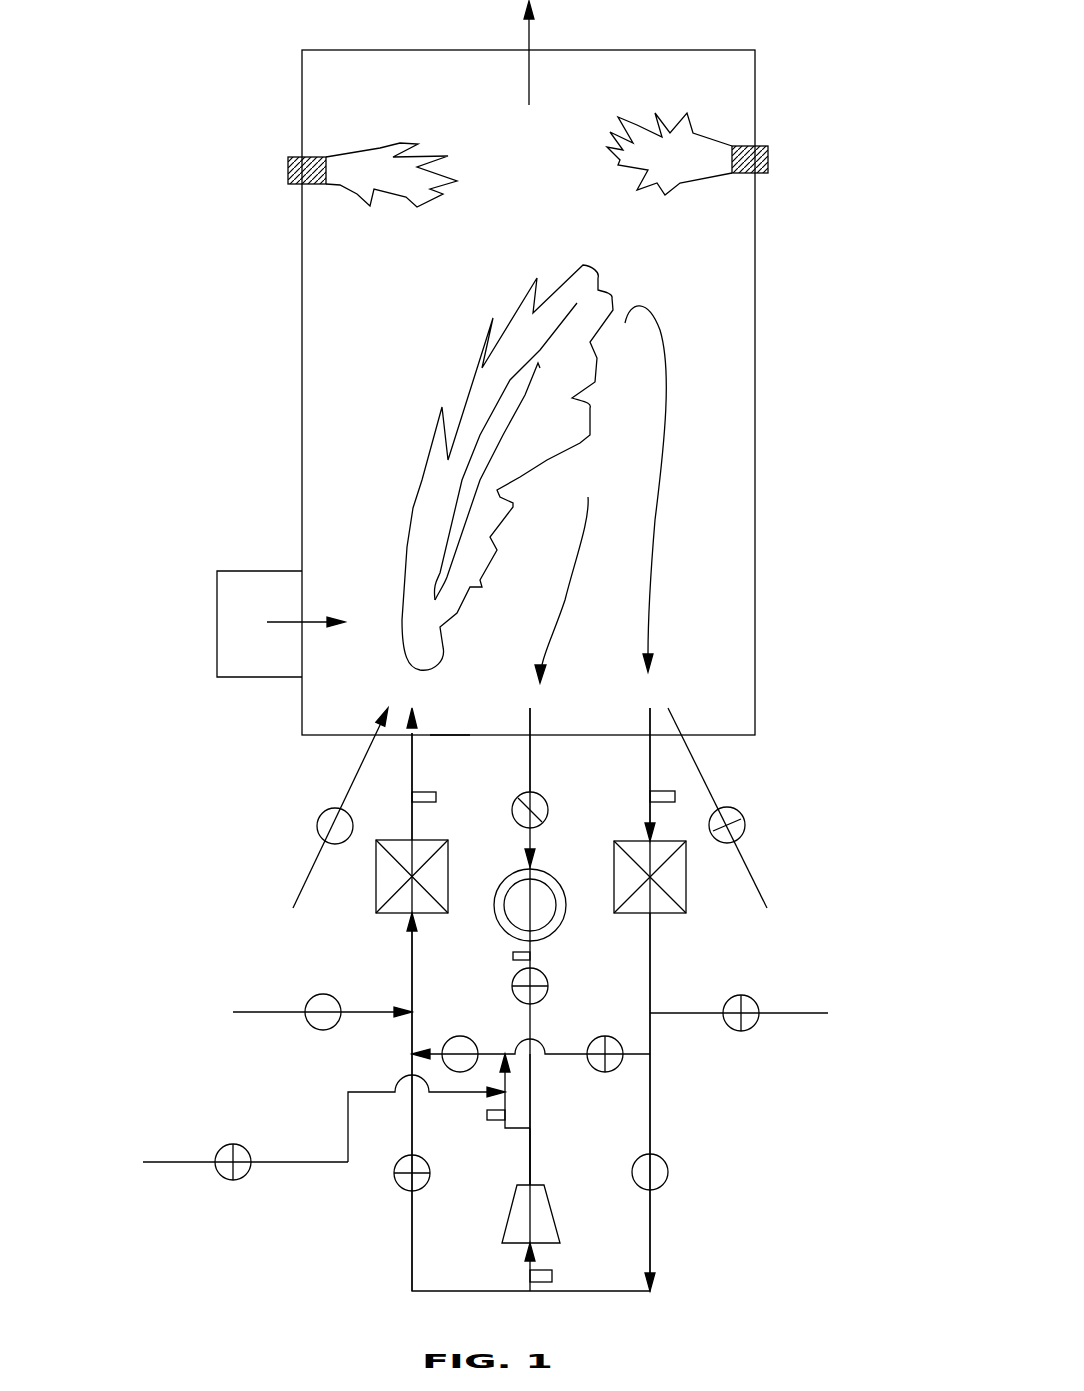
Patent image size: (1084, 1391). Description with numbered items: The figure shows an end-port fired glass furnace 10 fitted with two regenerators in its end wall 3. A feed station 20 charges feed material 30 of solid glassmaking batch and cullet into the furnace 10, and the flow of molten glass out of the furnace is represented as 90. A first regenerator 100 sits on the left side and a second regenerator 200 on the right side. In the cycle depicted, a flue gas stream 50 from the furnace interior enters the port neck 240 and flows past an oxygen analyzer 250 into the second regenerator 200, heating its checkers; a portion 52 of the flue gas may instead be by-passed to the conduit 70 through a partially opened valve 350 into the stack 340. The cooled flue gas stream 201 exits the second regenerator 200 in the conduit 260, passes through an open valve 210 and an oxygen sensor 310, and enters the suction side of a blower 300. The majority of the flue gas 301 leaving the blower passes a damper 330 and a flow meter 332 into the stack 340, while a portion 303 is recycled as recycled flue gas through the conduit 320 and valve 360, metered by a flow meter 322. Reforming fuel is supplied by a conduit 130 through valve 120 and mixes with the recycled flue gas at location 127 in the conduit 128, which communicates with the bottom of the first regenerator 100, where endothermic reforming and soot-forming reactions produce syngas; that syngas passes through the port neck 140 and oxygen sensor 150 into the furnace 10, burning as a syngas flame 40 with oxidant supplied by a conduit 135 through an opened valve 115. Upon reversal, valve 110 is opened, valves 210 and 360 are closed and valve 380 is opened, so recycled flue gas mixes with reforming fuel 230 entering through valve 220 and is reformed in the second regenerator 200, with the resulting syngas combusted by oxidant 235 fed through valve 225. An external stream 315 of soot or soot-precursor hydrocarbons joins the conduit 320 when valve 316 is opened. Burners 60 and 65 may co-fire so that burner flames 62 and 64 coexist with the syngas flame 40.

The end wall 3 is at (447, 734).
The end-port fired glass furnace 10 is at (755, 352).
The feed station 20 is at (268, 571).
The feed material 30 is at (312, 622).
The syngas flame 40 is at (442, 392).
The flue gas stream 50 is at (653, 478).
The portion of flue gases 52 is at (602, 624).
The burner 60 is at (290, 160).
The burner flame 62 is at (345, 190).
The burner flame 64 is at (617, 168).
The burner 65 is at (762, 148).
The conduit 70 is at (530, 753).
The flow of molten glass 90 is at (547, 53).
The first regenerator 100 is at (377, 912).
The valve 110 is at (394, 1175).
The valve 115 is at (323, 810).
The valve 120 is at (305, 1028).
The location 127 is at (413, 1010).
The conduit 128 is at (412, 945).
The conduit 130 is at (253, 1015).
The conduit 135 is at (310, 878).
The port neck 140 is at (457, 779).
The oxygen sensor 150 is at (437, 797).
The second regenerator 200 is at (687, 893).
The cooled flue gas stream 201 is at (650, 973).
The valve 210 is at (668, 1172).
The valve 220 is at (742, 1030).
The valve 225 is at (743, 828).
The reforming fuel 230 is at (818, 1014).
The oxidant 235 is at (758, 885).
The port neck 240 is at (650, 757).
The oxygen analyzer 250 is at (675, 797).
The conduit 260 is at (652, 1100).
The blower 300 is at (557, 1225).
The flue gas leaving the blower 301 is at (538, 1087).
The portion of flue gas 303 is at (520, 1117).
The oxygen sensor 310 is at (552, 1272).
The stream 315 is at (190, 1161).
The valve 316 is at (233, 1181).
The conduit 320 is at (500, 1156).
The flow meter 322 is at (487, 1110).
The damper 330 is at (548, 977).
The flow meter 332 is at (513, 955).
The stack 340 is at (611, 910).
The valve 350 is at (547, 812).
The valve 360 is at (457, 1036).
The valve 380 is at (592, 1036).